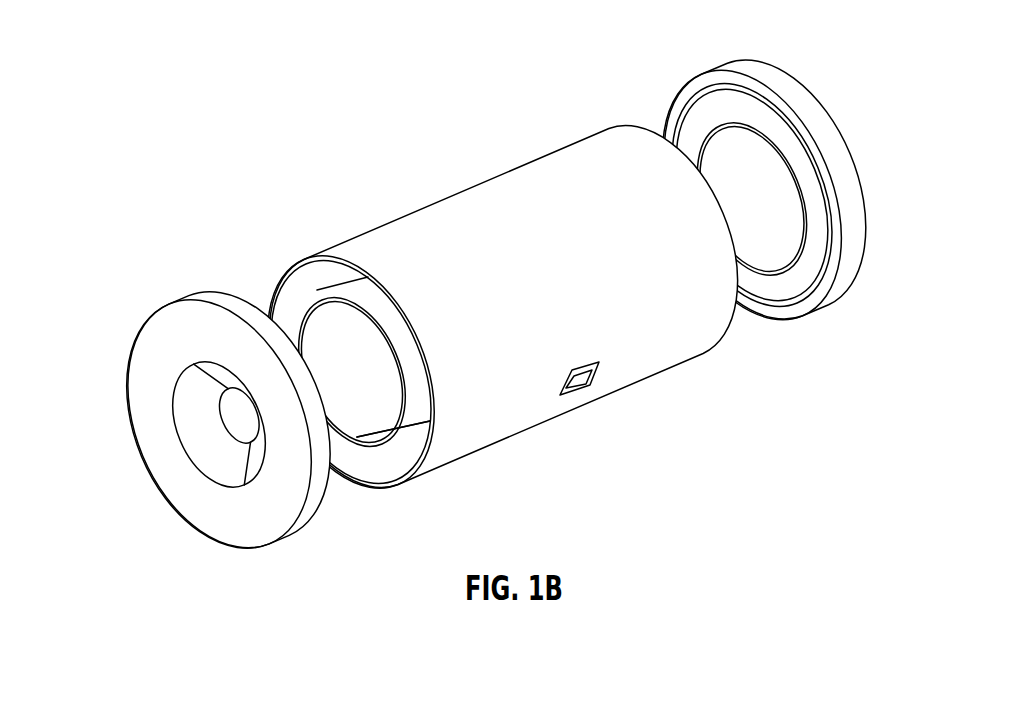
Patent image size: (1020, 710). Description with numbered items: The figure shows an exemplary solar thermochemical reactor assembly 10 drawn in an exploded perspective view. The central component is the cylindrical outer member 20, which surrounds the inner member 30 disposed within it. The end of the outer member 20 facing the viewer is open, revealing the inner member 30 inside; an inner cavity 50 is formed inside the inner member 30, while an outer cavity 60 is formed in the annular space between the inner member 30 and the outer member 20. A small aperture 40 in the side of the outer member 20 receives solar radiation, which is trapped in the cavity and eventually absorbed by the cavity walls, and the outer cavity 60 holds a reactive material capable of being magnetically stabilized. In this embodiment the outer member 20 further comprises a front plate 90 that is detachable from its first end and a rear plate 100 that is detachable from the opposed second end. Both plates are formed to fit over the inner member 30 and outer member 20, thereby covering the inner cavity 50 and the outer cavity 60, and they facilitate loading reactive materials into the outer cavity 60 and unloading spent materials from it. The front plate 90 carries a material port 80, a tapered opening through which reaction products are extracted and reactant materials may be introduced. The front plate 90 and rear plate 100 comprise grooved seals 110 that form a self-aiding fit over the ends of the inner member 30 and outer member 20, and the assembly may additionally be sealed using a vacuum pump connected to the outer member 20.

The solar thermochemical reactor 10 is at (368, 98).
The outer member 20 is at (393, 293).
The inner member 30 is at (406, 375).
The aperture 40 is at (578, 383).
The inner cavity 50 is at (347, 417).
The outer cavity 60 is at (403, 456).
The material port 80 is at (238, 418).
The front plate 90 is at (207, 302).
The rear plate 100 is at (773, 89).
The grooved seals 110 is at (825, 173).